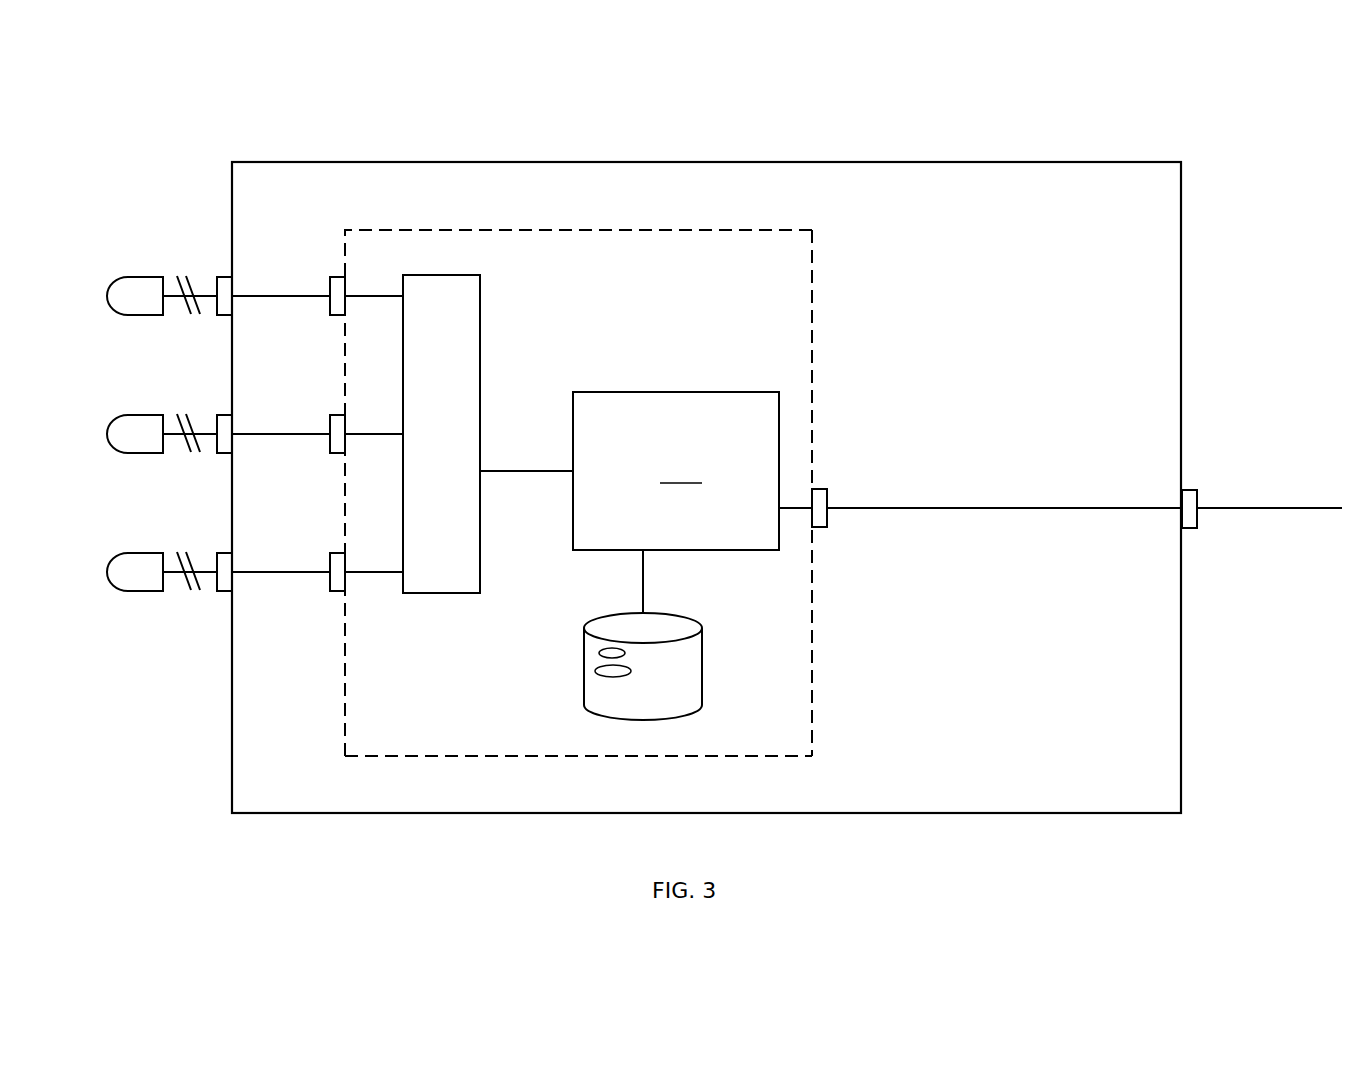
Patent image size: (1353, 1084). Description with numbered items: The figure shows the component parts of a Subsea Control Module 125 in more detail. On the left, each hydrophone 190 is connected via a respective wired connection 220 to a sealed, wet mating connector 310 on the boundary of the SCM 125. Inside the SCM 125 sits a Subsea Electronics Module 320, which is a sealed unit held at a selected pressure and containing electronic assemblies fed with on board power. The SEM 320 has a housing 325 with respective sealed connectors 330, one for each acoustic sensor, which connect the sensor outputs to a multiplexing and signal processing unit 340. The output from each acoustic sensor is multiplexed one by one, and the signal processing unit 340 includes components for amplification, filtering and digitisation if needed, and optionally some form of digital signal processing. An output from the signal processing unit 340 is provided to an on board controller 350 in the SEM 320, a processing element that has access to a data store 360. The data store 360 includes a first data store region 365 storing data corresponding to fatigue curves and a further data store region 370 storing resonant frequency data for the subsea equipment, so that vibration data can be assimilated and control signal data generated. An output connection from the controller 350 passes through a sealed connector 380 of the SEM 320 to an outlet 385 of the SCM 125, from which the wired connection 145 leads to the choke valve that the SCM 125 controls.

The Subsea Control Module 125 is at (465, 161).
The wired connection 145 is at (1270, 512).
The hydrophone 190 is at (105, 573).
The wired connection 220 is at (165, 564).
The wet mating connector 310 is at (232, 556).
The Subsea Electronics Module 320 is at (812, 322).
The housing 325 is at (483, 229).
The sealed connector 330 is at (298, 609).
The multiplexing and signal processing unit 340 is at (480, 343).
The on board controller 350 is at (676, 502).
The data store 360 is at (703, 663).
The first data store region 365 is at (598, 652).
The further data store region 370 is at (596, 672).
The sealed connector 380 is at (827, 500).
The outlet 385 is at (1197, 500).